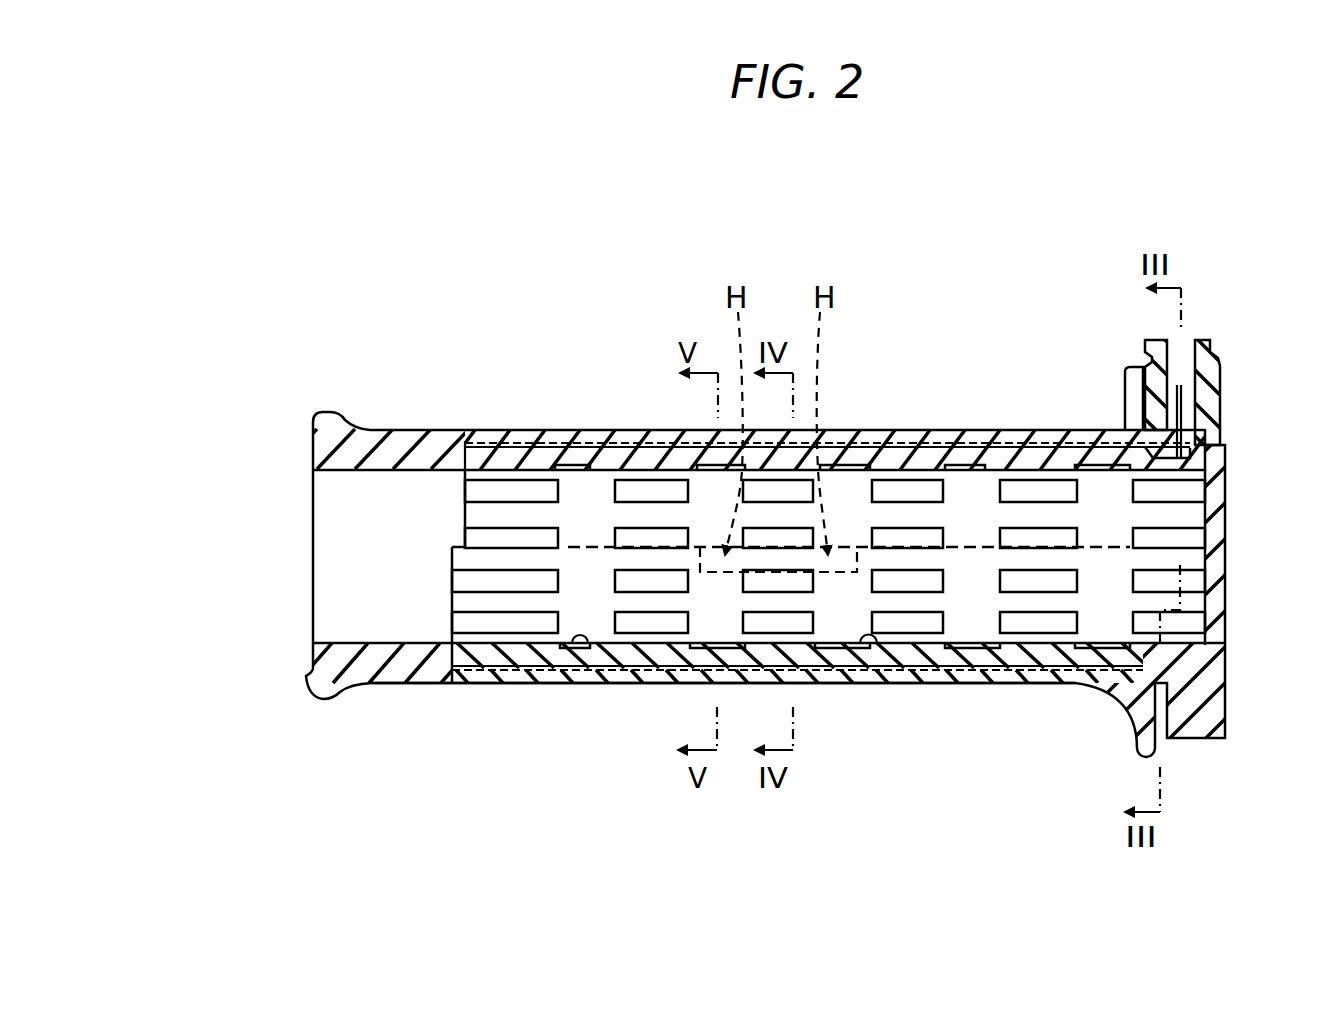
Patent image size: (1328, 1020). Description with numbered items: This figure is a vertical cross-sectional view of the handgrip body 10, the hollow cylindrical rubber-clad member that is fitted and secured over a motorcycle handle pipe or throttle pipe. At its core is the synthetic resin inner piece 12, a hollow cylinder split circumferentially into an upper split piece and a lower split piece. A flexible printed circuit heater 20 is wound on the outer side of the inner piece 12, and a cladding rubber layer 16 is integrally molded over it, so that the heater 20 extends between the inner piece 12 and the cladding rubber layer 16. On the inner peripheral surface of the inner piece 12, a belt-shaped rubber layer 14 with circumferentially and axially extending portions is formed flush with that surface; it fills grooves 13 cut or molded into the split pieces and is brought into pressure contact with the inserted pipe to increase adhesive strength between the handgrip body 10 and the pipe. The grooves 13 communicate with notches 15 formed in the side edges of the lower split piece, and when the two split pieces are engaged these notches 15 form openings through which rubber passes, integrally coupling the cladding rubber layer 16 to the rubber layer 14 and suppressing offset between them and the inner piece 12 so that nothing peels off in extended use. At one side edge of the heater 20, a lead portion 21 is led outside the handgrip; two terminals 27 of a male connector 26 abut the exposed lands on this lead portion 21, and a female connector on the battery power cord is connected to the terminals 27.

The handgrip body 10 is at (940, 418).
The inner piece 12 is at (465, 430).
The grooves 13 is at (583, 642).
The rubber layer 14 is at (470, 517).
The notches 15 is at (701, 572).
The cladding rubber layer 16 is at (458, 685).
The flexible printed circuit heater 20 is at (490, 455).
The lead portion 21 is at (1192, 437).
The male connector 26 is at (1203, 345).
The terminals 27 is at (1182, 395).